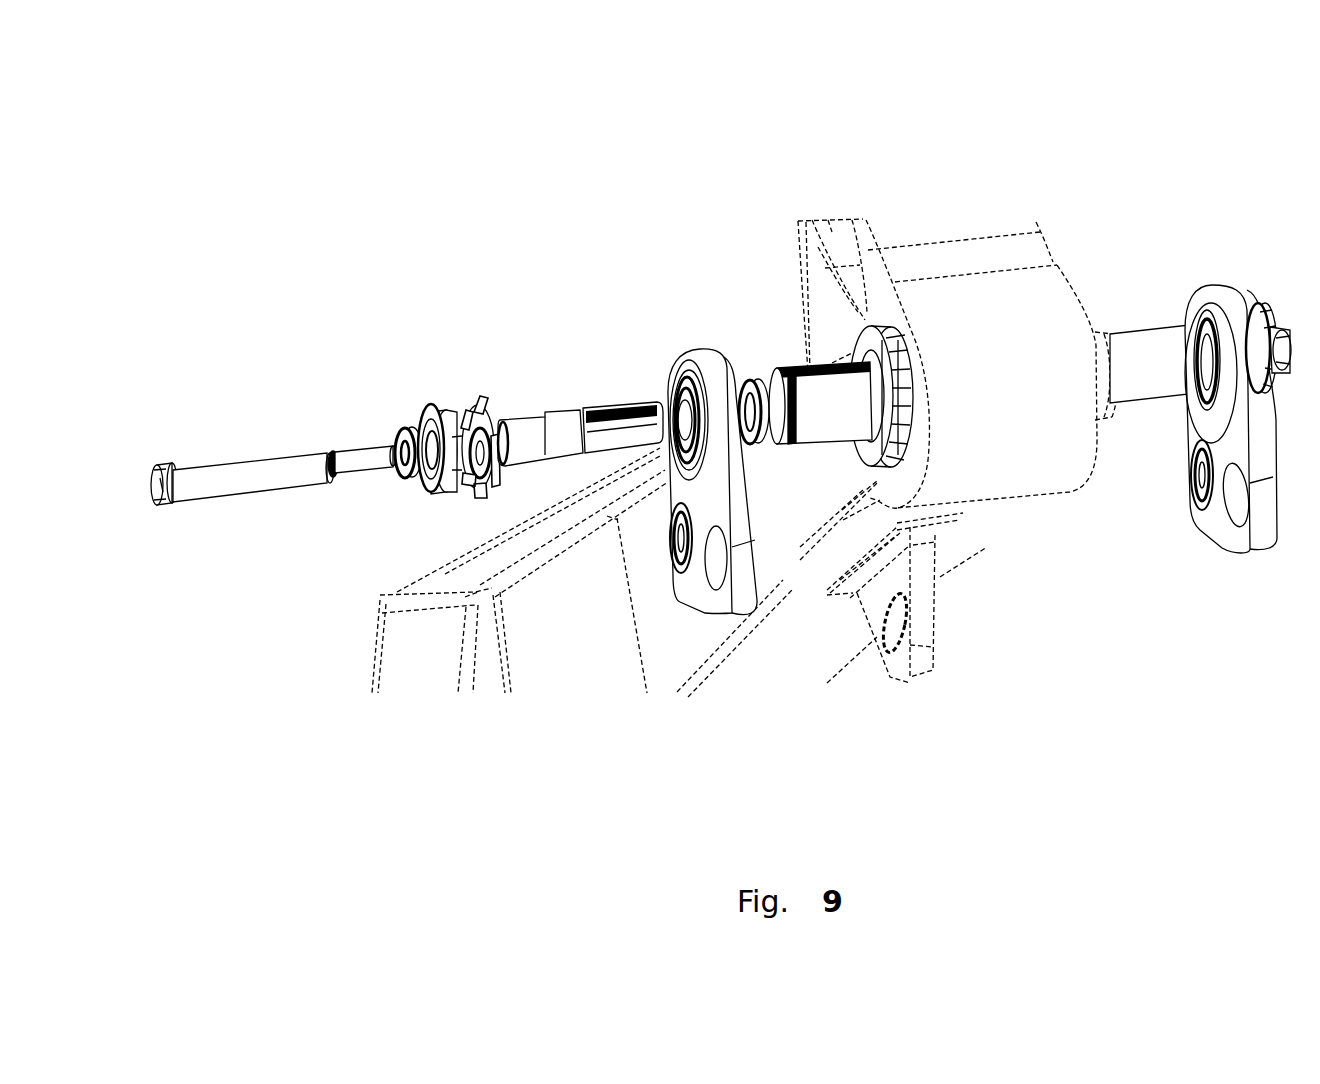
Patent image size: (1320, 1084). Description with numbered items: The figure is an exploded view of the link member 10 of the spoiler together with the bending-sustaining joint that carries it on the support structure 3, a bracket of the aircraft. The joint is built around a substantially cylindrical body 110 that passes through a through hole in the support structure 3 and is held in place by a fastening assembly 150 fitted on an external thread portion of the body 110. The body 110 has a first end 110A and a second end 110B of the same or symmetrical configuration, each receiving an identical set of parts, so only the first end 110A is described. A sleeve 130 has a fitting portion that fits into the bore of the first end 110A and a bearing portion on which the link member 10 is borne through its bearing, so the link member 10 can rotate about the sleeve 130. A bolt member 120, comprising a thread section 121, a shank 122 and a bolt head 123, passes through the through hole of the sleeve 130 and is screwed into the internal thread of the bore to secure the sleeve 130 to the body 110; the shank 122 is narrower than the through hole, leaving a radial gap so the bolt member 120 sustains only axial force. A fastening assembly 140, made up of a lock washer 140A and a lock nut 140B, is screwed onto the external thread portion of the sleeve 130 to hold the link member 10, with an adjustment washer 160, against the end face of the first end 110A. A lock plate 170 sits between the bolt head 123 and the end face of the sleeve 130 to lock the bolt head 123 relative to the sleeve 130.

The support structure 3 is at (1028, 463).
The link member 10 is at (717, 610).
The body 110 is at (833, 462).
The first end 110A is at (787, 333).
The second end 110B is at (1158, 330).
The bolt member 120 is at (254, 481).
The thread section 121 is at (351, 447).
The shank 122 is at (240, 452).
The bolt head 123 is at (157, 466).
The sleeve 130 is at (588, 383).
The fastening assembly 140 is at (437, 321).
The lock washer 140A is at (485, 378).
The lock nut 140B is at (425, 379).
The fastening assembly 150 is at (885, 308).
The adjustment washer 160 is at (746, 356).
The lock plate 170 is at (396, 495).